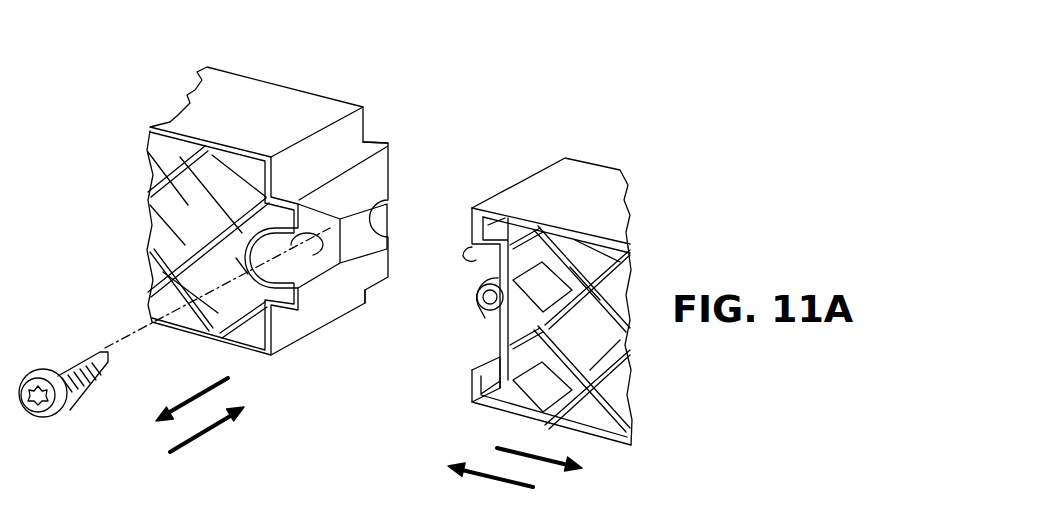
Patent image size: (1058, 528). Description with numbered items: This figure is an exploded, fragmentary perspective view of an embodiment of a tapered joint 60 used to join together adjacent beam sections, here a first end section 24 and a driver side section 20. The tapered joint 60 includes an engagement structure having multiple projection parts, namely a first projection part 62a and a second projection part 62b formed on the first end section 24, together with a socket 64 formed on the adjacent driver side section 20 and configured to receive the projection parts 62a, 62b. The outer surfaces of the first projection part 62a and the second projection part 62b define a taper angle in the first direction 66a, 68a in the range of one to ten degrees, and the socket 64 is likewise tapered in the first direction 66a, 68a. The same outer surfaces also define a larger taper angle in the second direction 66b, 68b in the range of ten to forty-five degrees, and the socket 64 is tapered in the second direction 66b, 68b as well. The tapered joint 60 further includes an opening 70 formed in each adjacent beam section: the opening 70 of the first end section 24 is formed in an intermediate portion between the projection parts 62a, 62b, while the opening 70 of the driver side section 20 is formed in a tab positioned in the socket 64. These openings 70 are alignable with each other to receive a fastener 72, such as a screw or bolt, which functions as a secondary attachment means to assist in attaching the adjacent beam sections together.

The first end section 24 is at (278, 83).
The first projection part 62a is at (378, 136).
The second projection part 62b is at (283, 322).
The opening 70 is at (313, 246).
The fastener 72 is at (42, 362).
The first direction 66a is at (200, 390).
The second direction 66b is at (197, 437).
The tapered joint 60 is at (346, 447).
The driver side section 20 is at (592, 162).
The socket 64 is at (475, 256).
The first direction 68a is at (547, 465).
The second direction 68b is at (487, 478).